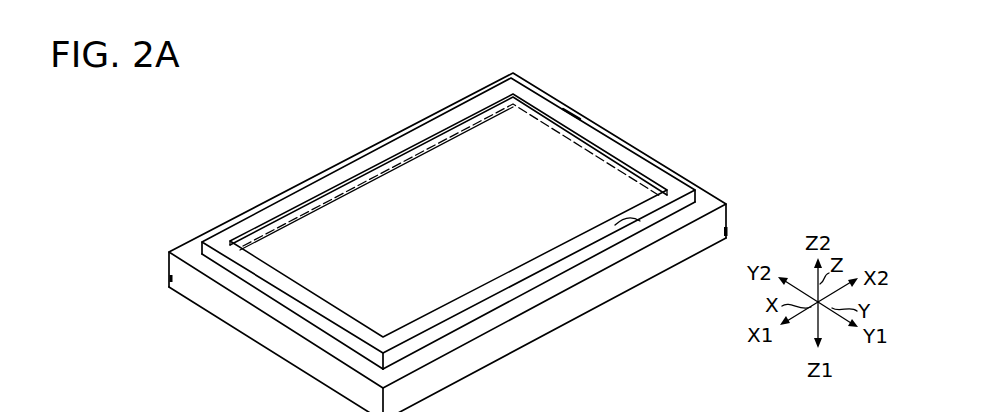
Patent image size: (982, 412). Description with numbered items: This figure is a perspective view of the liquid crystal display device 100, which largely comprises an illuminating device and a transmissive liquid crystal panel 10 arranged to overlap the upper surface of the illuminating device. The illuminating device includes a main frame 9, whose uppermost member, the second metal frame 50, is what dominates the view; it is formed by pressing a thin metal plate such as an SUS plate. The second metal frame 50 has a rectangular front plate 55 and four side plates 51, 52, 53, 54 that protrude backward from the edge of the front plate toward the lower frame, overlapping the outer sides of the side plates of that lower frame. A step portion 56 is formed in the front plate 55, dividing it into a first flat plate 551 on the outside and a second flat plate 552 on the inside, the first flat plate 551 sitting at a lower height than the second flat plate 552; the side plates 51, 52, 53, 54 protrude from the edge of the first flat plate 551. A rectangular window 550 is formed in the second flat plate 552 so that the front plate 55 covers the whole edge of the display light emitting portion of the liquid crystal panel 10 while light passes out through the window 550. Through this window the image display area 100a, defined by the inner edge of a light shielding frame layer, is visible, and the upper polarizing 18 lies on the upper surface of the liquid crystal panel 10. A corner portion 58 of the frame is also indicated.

The liquid crystal display device 100 is at (257, 105).
The image display area 100a is at (423, 148).
The liquid crystal panel 10 is at (368, 200).
The upper polarizing 18 is at (323, 230).
The second metal frame 50 is at (557, 90).
The main frame 9 is at (447, 194).
The side plate 51 is at (591, 295).
The side plate 52 is at (234, 216).
The side plate 53 is at (257, 338).
The side plate 54 is at (699, 187).
The front plate 55 is at (623, 140).
The window 550 is at (602, 135).
The first flat plate 551 is at (651, 158).
The second flat plate 552 is at (667, 176).
The step portion 56 is at (567, 105).
The corner portion 58 is at (385, 400).